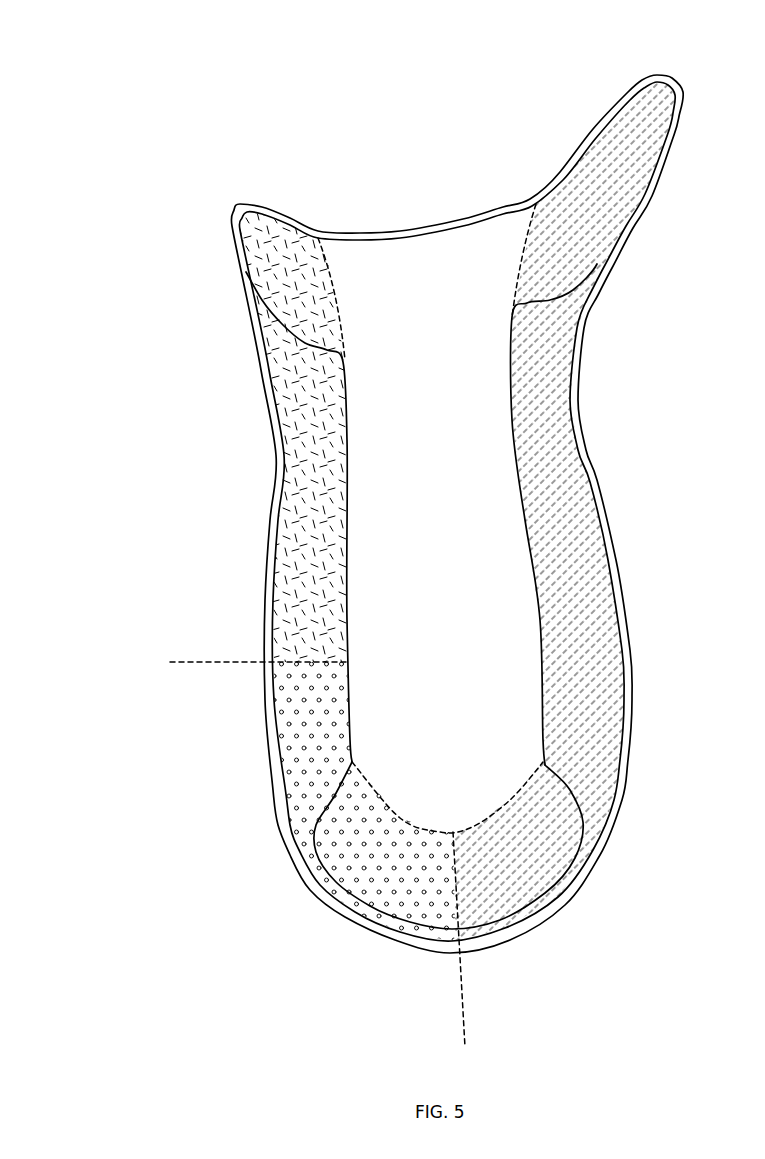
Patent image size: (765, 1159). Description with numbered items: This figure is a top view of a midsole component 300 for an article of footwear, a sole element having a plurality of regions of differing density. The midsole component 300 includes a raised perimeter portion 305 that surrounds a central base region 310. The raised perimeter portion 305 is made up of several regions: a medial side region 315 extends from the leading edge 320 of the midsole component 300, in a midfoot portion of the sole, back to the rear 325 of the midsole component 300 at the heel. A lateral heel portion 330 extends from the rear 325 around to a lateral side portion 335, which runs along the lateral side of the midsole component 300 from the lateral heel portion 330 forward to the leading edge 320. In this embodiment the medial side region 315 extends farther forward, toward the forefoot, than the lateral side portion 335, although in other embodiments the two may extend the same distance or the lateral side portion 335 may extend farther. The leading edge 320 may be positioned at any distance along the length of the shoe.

The midsole component 300 is at (120, 90).
The raised perimeter portion 305 is at (275, 227).
The central base region 310 is at (363, 269).
The medial side region 315 is at (581, 522).
The leading edge 320 is at (497, 197).
The rear 325 is at (473, 958).
The lateral heel portion 330 is at (278, 779).
The lateral side portion 335 is at (276, 554).